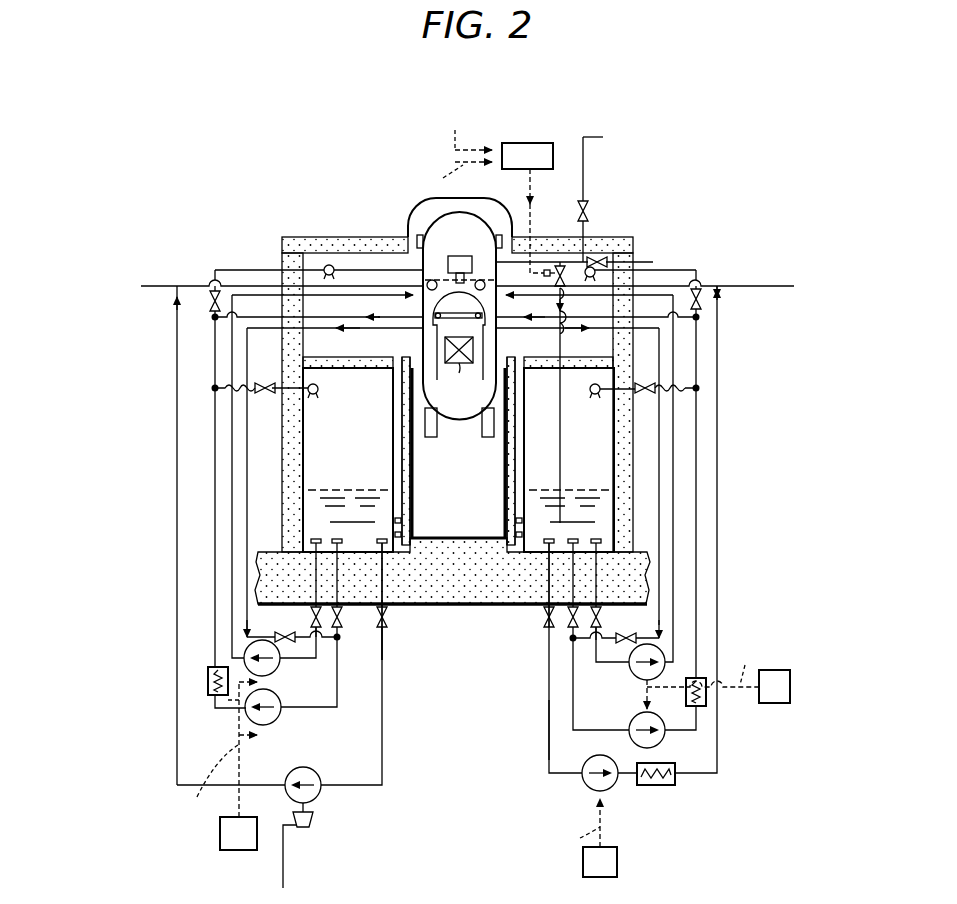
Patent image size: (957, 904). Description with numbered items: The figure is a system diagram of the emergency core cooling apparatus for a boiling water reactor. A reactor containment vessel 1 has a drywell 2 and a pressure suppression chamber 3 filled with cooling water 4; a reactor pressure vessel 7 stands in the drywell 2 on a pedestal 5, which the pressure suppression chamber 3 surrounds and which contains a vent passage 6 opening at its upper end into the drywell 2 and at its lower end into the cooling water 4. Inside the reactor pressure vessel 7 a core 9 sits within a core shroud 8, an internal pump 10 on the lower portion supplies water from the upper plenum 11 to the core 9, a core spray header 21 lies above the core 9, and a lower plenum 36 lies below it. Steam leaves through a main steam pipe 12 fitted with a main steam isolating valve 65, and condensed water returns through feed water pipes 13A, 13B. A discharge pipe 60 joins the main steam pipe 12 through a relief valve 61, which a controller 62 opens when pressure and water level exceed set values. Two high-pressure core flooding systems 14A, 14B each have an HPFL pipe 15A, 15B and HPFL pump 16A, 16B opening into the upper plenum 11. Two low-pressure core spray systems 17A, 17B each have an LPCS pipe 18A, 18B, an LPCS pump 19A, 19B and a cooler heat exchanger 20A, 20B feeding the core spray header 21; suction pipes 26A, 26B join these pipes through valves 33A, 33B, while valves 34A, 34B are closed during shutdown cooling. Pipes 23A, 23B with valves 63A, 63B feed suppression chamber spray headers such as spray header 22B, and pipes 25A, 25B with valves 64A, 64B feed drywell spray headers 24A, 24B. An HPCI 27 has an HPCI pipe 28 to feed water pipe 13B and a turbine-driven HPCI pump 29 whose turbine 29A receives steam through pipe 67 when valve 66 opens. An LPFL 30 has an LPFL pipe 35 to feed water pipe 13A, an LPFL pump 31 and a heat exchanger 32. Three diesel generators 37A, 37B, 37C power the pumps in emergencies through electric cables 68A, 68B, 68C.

The reactor containment vessel 1 is at (633, 248).
The drywell 2 is at (358, 255).
The pressure suppression chamber 3 is at (381, 462).
The cooling water 4 is at (342, 490).
The pedestal 5 is at (410, 506).
The vent passage 6 is at (507, 506).
The reactor pressure vessel 7 is at (440, 222).
The core shroud 8 is at (488, 346).
The core 9 is at (462, 372).
The internal pump 10 is at (488, 440).
The upper plenum 11 is at (426, 298).
The main steam pipe 12 is at (541, 258).
The feed water pipe 13A is at (779, 286).
The feed water pipe 13B is at (157, 285).
The high-pressure core flooding apparatus 14A is at (675, 435).
The high-pressure core flooding apparatus 14B is at (232, 464).
The HPFL pipe 15A is at (674, 592).
The HPFL pipe 15B is at (232, 527).
The HPFL pump 16A is at (663, 655).
The HPFL pump 16B is at (278, 703).
The low-pressure core spray apparatus 17A is at (697, 500).
The low-pressure core spray apparatus 17B is at (215, 593).
The LPCS pipe 18A is at (573, 677).
The LPCS pipe 18B is at (338, 710).
The LPCS pump 19A is at (667, 740).
The LPCS pump 19B is at (246, 712).
The heat exchanger 20A is at (706, 709).
The heat exchanger 20B is at (208, 680).
The core spray header 21 is at (455, 321).
The spray header 22B is at (320, 390).
The pipe 23A is at (697, 385).
The pipe 23B is at (245, 385).
The spray header 24A is at (591, 262).
The spray header 24B is at (326, 264).
The pipe 25A is at (675, 269).
The pipe 25B is at (222, 270).
The suction pipe 26A is at (660, 372).
The suction pipe 26B is at (247, 500).
The HPCI 27 is at (177, 765).
The HPCI pipe 28 is at (382, 674).
The HPCI pump 29 is at (322, 796).
The turbine 29A is at (314, 822).
The LPFL 30 is at (705, 776).
The LPFL pump 31 is at (589, 794).
The heat exchanger 32 is at (665, 789).
The valve 33A is at (622, 643).
The valve 33B is at (289, 645).
The valve 34A is at (572, 628).
The valve 34B is at (341, 622).
The LPFL pipe 35 is at (549, 742).
The lower plenum 36 is at (452, 420).
The diesel-engine generator 37A is at (790, 676).
The diesel-engine generator 37B is at (220, 834).
The diesel-engine generator 37C is at (617, 861).
The discharge pipe 60 is at (562, 444).
The relief valve 61 is at (562, 264).
The controller 62 is at (541, 143).
The valve 63A is at (648, 390).
The valve 63B is at (265, 393).
The valve 64A is at (701, 305).
The valve 64B is at (209, 300).
The main steam isolating valve 65 is at (605, 254).
The valve 66 is at (586, 203).
The pipe 67 is at (602, 137).
The electric cable 68A is at (752, 662).
The electric cable 68B is at (203, 784).
The electric cable 68C is at (568, 839).